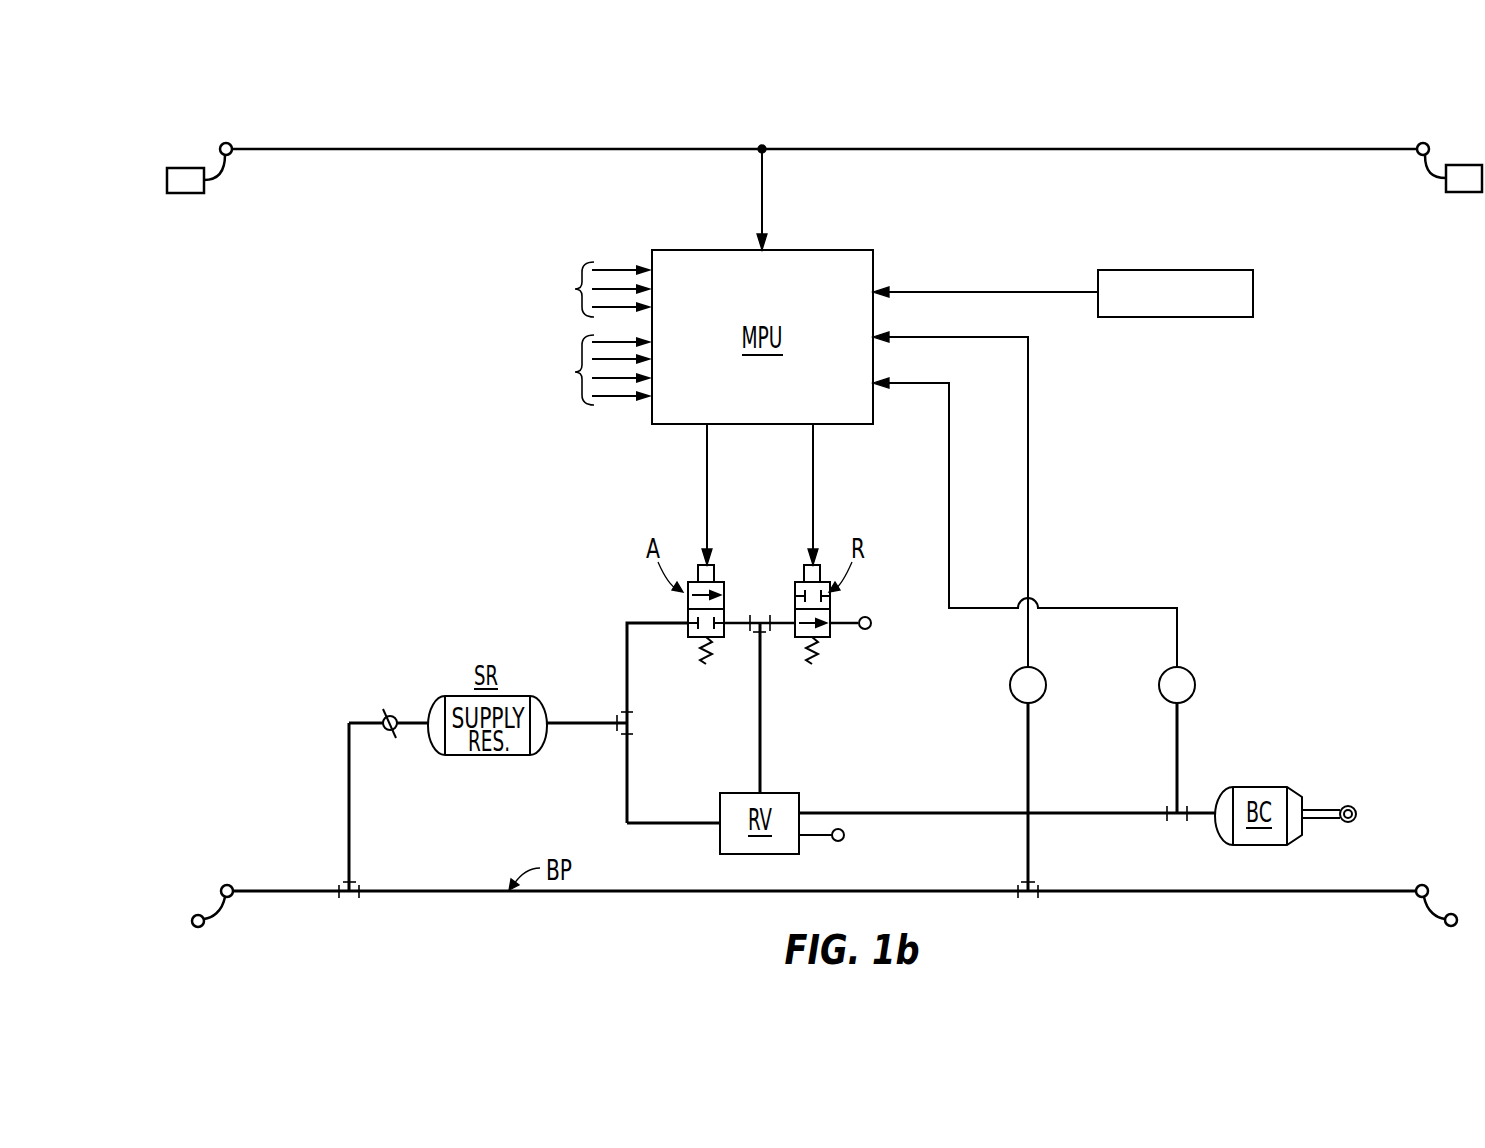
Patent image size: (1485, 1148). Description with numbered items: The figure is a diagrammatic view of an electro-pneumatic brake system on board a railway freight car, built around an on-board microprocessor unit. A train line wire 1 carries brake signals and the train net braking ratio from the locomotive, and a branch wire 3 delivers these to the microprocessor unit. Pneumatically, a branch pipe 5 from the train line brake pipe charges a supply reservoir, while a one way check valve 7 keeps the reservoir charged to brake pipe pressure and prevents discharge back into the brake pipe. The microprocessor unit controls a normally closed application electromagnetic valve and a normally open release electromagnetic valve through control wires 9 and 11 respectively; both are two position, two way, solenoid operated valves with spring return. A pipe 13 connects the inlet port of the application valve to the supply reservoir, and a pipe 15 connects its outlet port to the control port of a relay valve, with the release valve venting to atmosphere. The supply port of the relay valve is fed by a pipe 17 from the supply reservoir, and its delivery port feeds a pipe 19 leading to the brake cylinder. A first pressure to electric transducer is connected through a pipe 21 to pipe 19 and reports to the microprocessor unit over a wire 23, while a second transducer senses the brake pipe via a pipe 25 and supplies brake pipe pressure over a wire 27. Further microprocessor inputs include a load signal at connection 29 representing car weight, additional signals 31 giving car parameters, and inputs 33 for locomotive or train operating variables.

The train line wire 1 is at (627, 149).
The branch wire 3 is at (762, 191).
The branch pipe 5 is at (352, 797).
The one way check valve 7 is at (385, 710).
The control wire 9 is at (707, 480).
The control wire 11 is at (813, 487).
The pipe 13 is at (627, 653).
The pipe 15 is at (762, 695).
The pipe 17 is at (627, 775).
The pipe 19 is at (1094, 812).
The pipe 21 is at (1180, 748).
The wire 23 is at (950, 484).
The pipe 25 is at (1028, 851).
The wire 27 is at (1030, 428).
The load signal connection 29 is at (1040, 290).
The additional signals 31 is at (572, 271).
The inputs 33 is at (572, 400).